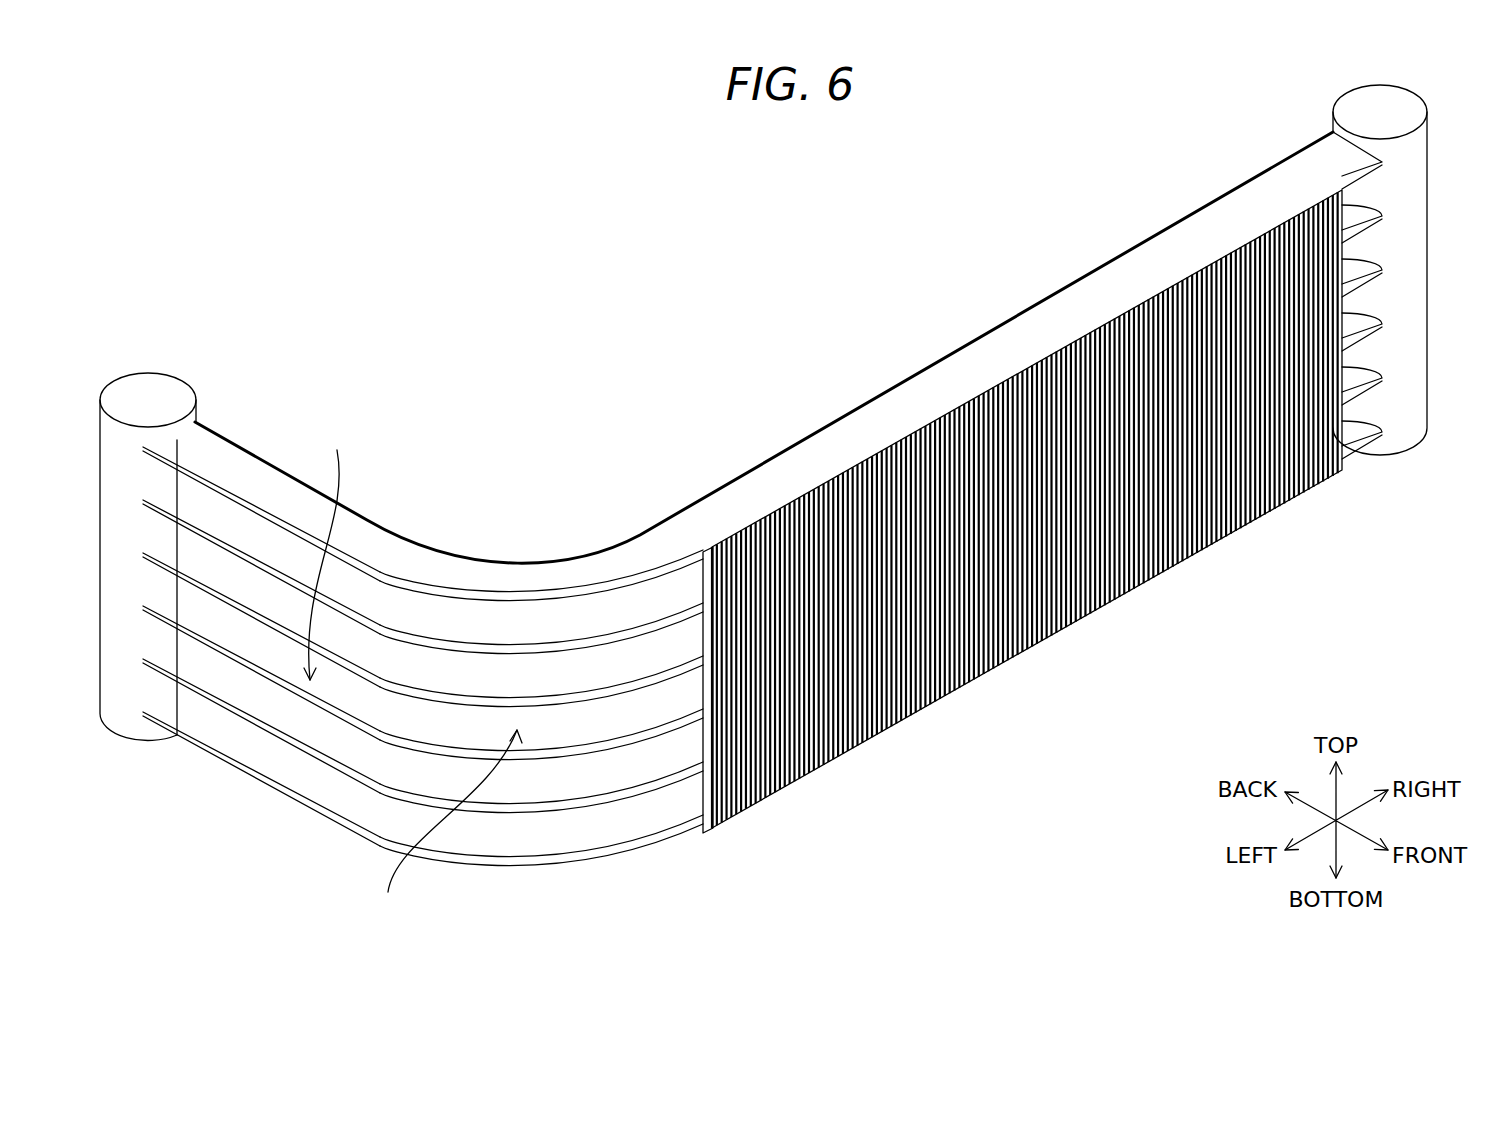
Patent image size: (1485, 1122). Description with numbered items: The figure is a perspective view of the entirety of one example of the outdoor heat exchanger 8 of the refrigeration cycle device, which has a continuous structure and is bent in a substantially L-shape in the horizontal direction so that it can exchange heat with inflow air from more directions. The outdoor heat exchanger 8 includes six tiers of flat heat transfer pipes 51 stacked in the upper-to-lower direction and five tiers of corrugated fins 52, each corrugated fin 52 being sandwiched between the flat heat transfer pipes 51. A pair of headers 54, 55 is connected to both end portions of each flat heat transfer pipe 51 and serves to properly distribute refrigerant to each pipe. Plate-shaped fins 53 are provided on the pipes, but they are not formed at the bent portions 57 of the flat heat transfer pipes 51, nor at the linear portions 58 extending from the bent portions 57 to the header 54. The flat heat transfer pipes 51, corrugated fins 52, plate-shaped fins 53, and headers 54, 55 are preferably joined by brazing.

The outdoor heat exchanger 8 is at (855, 368).
The flat heat transfer pipes 51 is at (197, 530).
The corrugated fins 52 is at (477, 672).
The plate-shaped fins 53 is at (713, 730).
The header 54 is at (148, 388).
The header 55 is at (1378, 108).
The bent portions 57 is at (445, 824).
The linear portions 58 is at (326, 551).